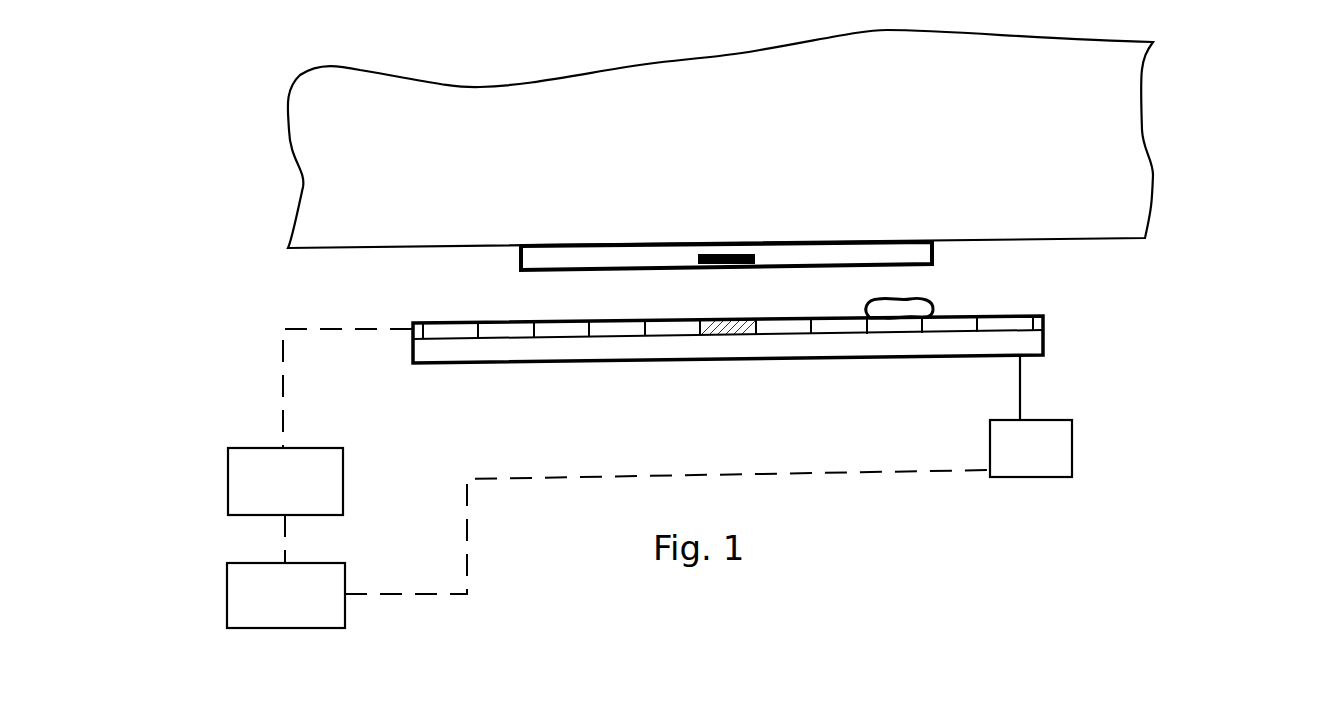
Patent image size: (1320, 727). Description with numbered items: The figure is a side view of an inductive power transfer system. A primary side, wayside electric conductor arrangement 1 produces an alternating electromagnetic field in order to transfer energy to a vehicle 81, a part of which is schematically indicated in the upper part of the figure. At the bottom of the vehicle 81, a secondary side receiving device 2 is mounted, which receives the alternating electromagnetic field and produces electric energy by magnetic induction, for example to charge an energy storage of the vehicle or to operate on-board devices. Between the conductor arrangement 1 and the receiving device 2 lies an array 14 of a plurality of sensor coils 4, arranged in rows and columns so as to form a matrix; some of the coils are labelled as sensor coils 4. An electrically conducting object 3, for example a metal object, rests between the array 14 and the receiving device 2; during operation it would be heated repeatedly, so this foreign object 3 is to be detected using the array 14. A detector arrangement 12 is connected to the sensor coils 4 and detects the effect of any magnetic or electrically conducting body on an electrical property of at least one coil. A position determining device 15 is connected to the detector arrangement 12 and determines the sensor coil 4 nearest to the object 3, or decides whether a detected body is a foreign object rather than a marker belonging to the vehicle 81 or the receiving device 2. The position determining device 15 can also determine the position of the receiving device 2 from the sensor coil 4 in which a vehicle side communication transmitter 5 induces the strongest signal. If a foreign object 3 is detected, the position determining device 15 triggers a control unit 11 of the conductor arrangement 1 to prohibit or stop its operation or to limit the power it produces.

The vehicle 81 is at (1150, 160).
The receiving device 2 is at (543, 258).
The communication transmitter 5 is at (730, 268).
The electric conductor arrangement 1 is at (741, 381).
The array 14 is at (1032, 323).
The sensor coil 4 is at (512, 340).
The electrically conducting object 3 is at (923, 300).
The control unit 11 is at (1072, 453).
The detector arrangement 12 is at (343, 482).
The position determining device 15 is at (345, 627).